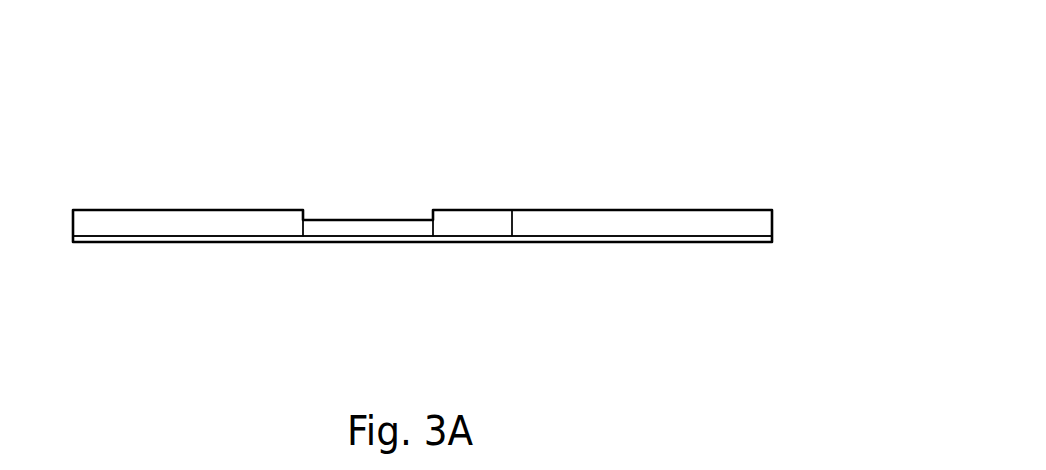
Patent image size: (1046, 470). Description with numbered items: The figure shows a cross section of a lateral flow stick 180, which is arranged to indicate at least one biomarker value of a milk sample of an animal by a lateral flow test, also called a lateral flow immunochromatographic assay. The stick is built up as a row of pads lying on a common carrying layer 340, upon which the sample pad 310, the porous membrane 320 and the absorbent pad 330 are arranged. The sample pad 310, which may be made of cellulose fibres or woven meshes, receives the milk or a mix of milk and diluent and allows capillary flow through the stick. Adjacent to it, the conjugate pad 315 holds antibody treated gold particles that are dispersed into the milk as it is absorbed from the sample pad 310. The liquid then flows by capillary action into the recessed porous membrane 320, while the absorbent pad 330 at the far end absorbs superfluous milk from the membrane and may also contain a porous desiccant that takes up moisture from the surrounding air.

The lateral flow stick 180 is at (762, 108).
The sample pad 310 is at (640, 223).
The conjugate pad 315 is at (479, 226).
The porous membrane 320 is at (345, 225).
The absorbent pad 330 is at (193, 223).
The carrying layer 340 is at (415, 236).